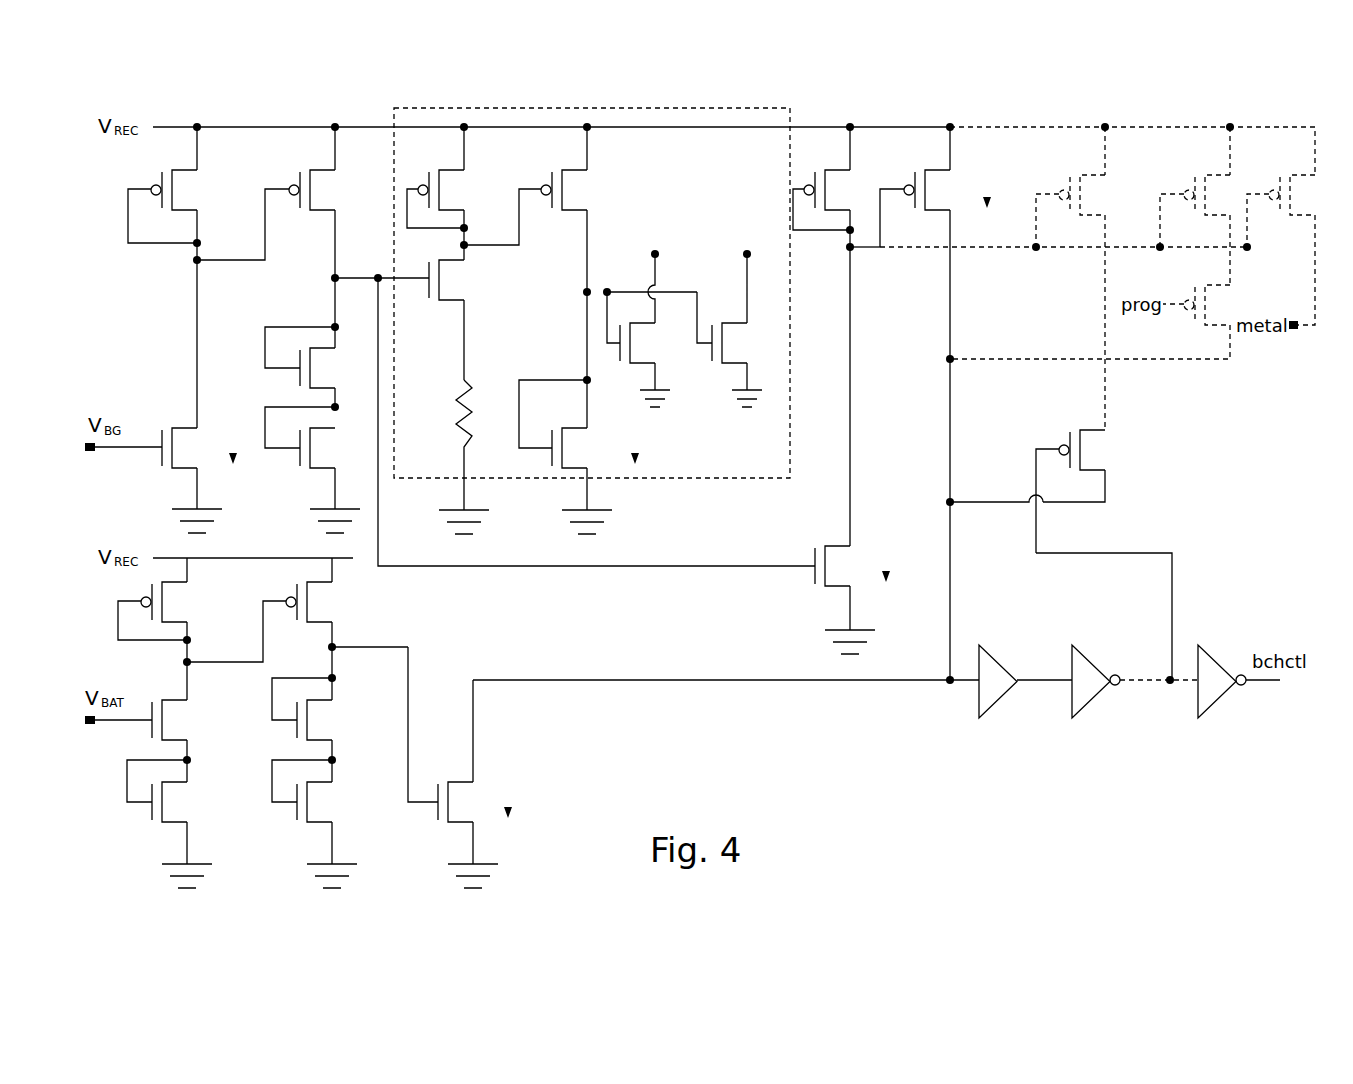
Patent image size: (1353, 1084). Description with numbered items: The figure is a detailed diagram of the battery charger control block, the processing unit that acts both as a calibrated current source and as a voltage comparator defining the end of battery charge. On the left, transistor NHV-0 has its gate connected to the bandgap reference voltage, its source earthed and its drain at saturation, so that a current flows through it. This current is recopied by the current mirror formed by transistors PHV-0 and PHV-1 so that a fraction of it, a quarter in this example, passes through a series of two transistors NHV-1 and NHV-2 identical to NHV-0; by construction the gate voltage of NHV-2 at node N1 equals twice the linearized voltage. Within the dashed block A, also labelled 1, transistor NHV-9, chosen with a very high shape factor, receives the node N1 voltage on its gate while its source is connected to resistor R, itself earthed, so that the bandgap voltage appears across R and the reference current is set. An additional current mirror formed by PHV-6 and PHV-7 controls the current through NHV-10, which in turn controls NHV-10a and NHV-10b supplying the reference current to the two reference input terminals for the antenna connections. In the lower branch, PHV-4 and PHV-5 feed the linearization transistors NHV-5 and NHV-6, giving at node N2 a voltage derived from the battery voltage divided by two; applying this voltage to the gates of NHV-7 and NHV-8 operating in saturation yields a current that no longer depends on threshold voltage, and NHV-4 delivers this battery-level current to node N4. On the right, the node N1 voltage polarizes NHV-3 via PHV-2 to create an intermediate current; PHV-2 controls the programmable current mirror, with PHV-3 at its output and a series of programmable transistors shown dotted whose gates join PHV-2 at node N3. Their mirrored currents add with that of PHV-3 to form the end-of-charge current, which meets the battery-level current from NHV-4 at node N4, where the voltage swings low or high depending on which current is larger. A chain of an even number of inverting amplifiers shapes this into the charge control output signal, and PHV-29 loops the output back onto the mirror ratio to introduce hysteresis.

The reference current generator block A is at (413, 108).
The current reference circuit 1 is at (615, 330).
The node N1 is at (360, 277).
The node N2 is at (349, 647).
The node N3 is at (863, 257).
The node N4 is at (726, 690).
The resistor R is at (465, 457).
The transistor PHV_0 PHV-0 is at (176, 195).
The transistor PHV_1 PHV-1 is at (326, 202).
The transistor PHV_2 PHV-2 is at (835, 187).
The transistor PHV_3 PHV-3 is at (958, 243).
The transistor PHV_4 PHV-4 is at (166, 612).
The transistor PHV_5 PHV-5 is at (323, 602).
The transistor PHV_6 PHV-6 is at (449, 193).
The transistor PHV_7 PHV-7 is at (578, 209).
The transistor PHV_29 PHV-29 is at (1089, 491).
The transistor NHV_0 NHV-0 is at (173, 480).
The transistor NHV_1 NHV-1 is at (315, 468).
The transistor NHV_2 NHV-2 is at (315, 365).
The transistor NHV_3 NHV-3 is at (863, 600).
The transistor NHV_4 NHV-4 is at (486, 784).
The transistor NHV_5 NHV-5 is at (317, 719).
The transistor NHV_6 NHV-6 is at (317, 824).
The transistor NHV_7 NHV-7 is at (172, 824).
The transistor NHV_8 NHV-8 is at (156, 732).
The transistor NHV_9 NHV-9 is at (461, 320).
The transistor NHV_10 NHV-10 is at (596, 455).
The transistor NHV_10A NHV-10a is at (650, 349).
The transistor NHV_10B NHV-10b is at (742, 349).